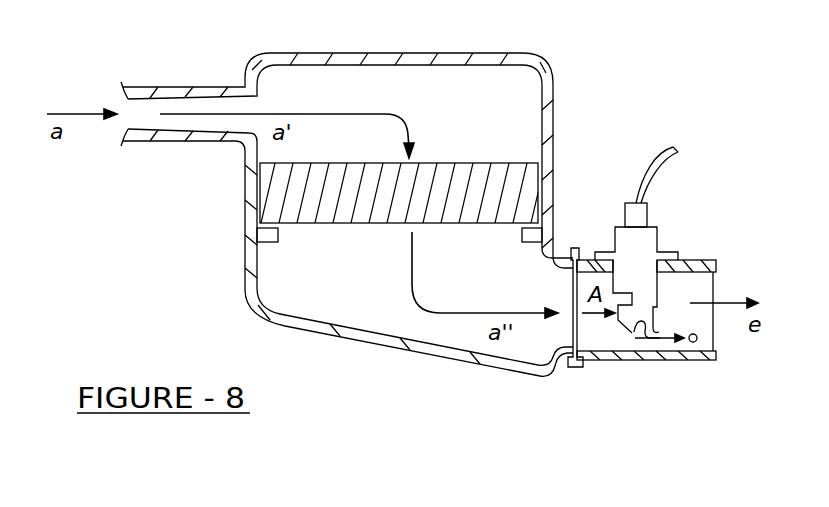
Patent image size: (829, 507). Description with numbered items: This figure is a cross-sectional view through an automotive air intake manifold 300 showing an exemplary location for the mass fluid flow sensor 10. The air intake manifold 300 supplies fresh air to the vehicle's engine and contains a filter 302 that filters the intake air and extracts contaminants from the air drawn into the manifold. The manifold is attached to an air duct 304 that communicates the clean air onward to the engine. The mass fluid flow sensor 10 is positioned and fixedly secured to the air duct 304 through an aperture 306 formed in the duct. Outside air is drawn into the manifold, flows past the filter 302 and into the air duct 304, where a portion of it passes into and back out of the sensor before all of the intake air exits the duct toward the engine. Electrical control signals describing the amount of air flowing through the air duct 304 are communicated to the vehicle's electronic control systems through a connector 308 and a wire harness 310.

The mass fluid flow sensor 10 is at (668, 226).
The air intake manifold 300 is at (345, 337).
The filter 302 is at (508, 165).
The air duct 304 is at (622, 360).
The aperture 306 is at (695, 258).
The connector 308 is at (627, 220).
The wire harness 310 is at (672, 145).